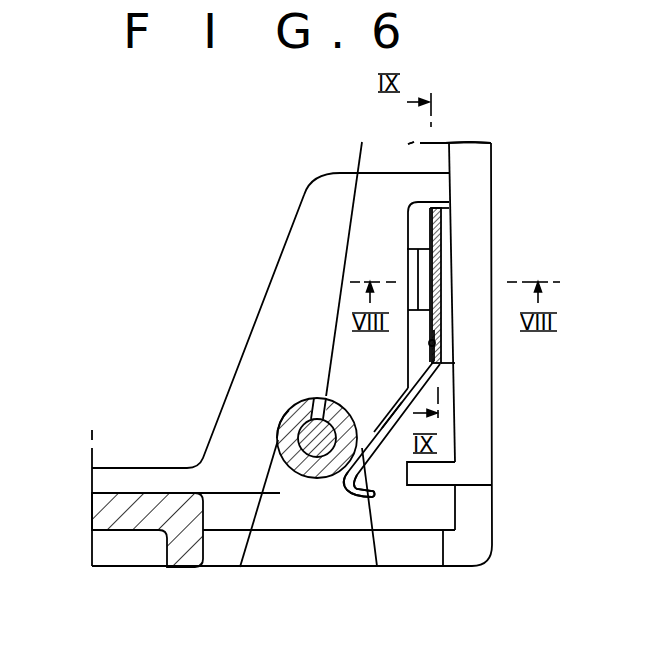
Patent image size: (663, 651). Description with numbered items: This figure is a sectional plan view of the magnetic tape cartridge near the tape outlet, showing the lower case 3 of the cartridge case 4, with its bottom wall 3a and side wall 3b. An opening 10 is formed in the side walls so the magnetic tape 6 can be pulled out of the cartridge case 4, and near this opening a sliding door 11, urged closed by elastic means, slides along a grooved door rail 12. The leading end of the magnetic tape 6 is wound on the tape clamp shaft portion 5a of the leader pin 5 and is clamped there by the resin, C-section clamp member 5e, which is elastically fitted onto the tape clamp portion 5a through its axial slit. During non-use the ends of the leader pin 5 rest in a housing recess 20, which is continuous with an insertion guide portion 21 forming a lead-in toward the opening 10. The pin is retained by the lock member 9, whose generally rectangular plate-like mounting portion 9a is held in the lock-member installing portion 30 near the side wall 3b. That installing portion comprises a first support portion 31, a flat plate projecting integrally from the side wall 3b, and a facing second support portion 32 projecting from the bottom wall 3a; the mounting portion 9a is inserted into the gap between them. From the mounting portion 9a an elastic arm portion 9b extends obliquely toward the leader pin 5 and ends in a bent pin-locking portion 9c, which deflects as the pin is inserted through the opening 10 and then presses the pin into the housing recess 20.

The lower case 3 is at (493, 542).
The bottom wall 3a is at (383, 513).
The side wall 3b is at (485, 408).
The cartridge case 4 is at (498, 140).
The leader pin 5 is at (268, 436).
The tape clamp shaft portion 5a is at (311, 403).
The clamp member 5e is at (292, 479).
The magnetic tape 6 is at (358, 153).
The lock member 9 is at (415, 367).
The mounting portion 9a is at (438, 343).
The arm portion 9b is at (382, 428).
The pin-locking portion 9c is at (346, 496).
The opening 10 is at (420, 525).
The sliding door 11 is at (122, 533).
The door rail 12 is at (228, 506).
The housing recess 20 is at (279, 437).
The insertion guide portion 21 is at (267, 553).
The lock-member installing portion 30 is at (398, 259).
The first support portion 31 is at (442, 239).
The second support portion 32 is at (416, 248).